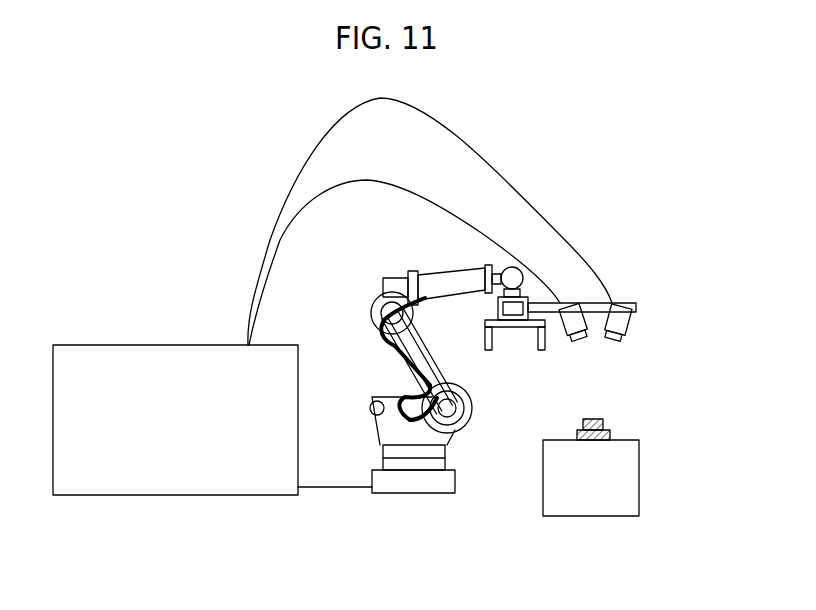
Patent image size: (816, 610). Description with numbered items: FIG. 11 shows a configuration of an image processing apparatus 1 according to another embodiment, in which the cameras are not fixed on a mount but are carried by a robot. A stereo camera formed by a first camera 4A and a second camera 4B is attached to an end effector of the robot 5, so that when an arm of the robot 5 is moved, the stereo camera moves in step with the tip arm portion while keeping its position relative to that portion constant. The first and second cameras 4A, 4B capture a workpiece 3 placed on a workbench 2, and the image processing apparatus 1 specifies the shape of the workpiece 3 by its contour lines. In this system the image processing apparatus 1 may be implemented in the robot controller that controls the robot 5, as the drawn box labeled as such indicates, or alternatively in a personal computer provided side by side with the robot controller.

The image processing apparatus 1 is at (118, 345).
The workbench 2 is at (639, 487).
The workpiece 3 is at (603, 424).
The first camera 4A is at (568, 341).
The second camera 4B is at (633, 305).
The robot 5 is at (430, 493).